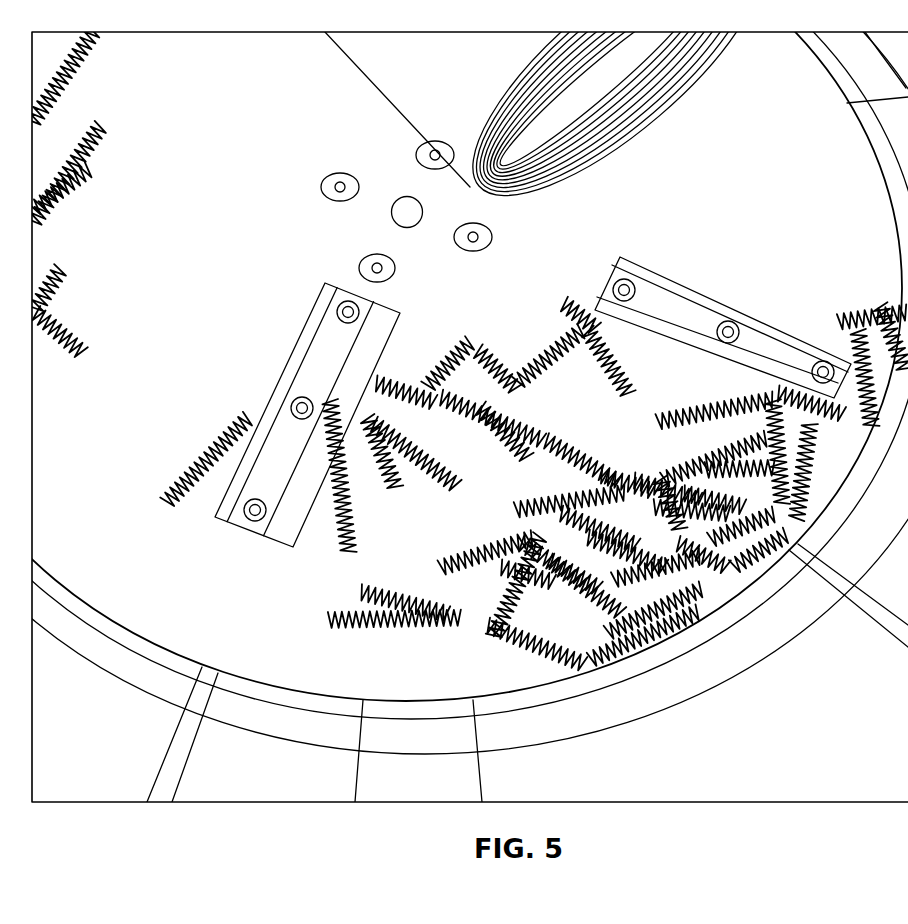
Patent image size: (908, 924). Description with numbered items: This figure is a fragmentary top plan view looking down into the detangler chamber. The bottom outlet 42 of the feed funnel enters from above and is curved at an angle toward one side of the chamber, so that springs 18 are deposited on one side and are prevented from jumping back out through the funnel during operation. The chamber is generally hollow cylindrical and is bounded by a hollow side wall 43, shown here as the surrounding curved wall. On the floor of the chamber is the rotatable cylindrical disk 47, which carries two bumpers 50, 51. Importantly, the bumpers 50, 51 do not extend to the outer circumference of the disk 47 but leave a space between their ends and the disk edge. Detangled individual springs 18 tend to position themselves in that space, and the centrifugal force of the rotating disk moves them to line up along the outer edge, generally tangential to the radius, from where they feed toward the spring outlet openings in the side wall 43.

The springs 18 is at (553, 490).
The bottom outlet 42 is at (467, 85).
The hollow side wall 43 is at (809, 751).
The cylindrical disk 47 is at (190, 296).
The bumper 50 is at (258, 523).
The bumper 51 is at (690, 303).